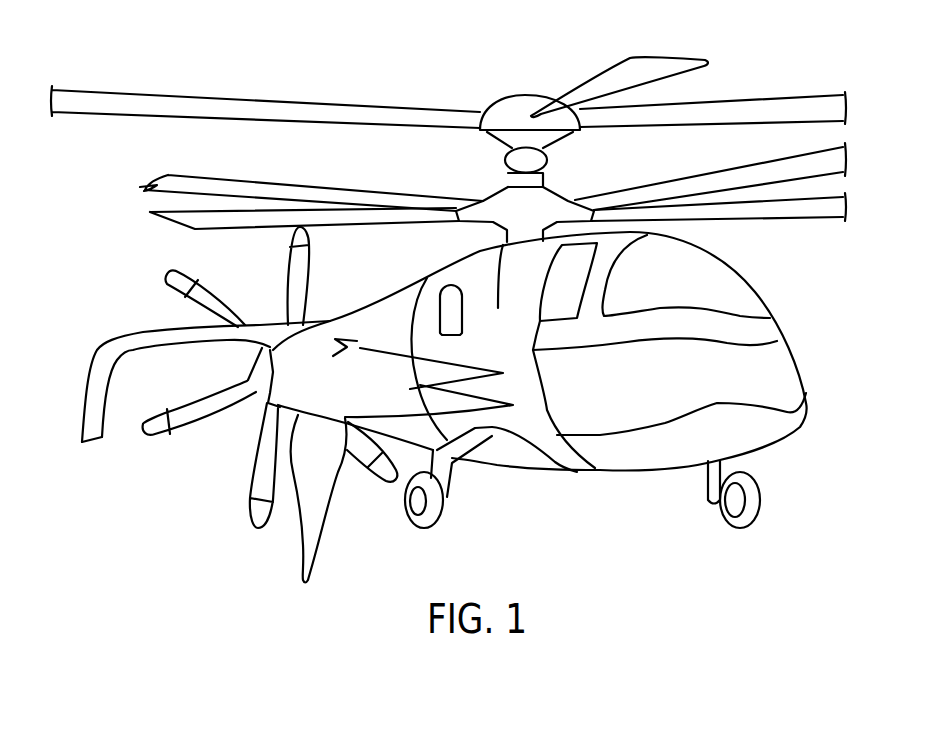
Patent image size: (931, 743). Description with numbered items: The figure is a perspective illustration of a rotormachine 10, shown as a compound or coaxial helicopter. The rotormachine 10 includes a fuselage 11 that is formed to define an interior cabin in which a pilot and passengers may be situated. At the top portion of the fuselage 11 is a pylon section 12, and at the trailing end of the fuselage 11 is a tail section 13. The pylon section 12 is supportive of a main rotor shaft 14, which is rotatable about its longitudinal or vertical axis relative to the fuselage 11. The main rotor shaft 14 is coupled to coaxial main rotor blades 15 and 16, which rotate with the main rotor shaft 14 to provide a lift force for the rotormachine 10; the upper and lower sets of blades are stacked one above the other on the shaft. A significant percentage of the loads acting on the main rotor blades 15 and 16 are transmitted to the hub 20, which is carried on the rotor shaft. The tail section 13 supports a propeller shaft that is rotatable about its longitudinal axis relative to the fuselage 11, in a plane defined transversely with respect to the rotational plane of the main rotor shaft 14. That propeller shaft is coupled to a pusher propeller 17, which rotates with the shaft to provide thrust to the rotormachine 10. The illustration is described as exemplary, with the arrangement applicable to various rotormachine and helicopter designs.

The rotormachine 10 is at (593, 484).
The fuselage 11 is at (558, 455).
The pylon section 12 is at (460, 270).
The tail section 13 is at (343, 452).
The main rotor shaft 14 is at (540, 157).
The main rotor blade 15 is at (180, 108).
The main rotor blade 16 is at (145, 190).
The pusher propeller 17 is at (188, 416).
The hub 20 is at (514, 107).